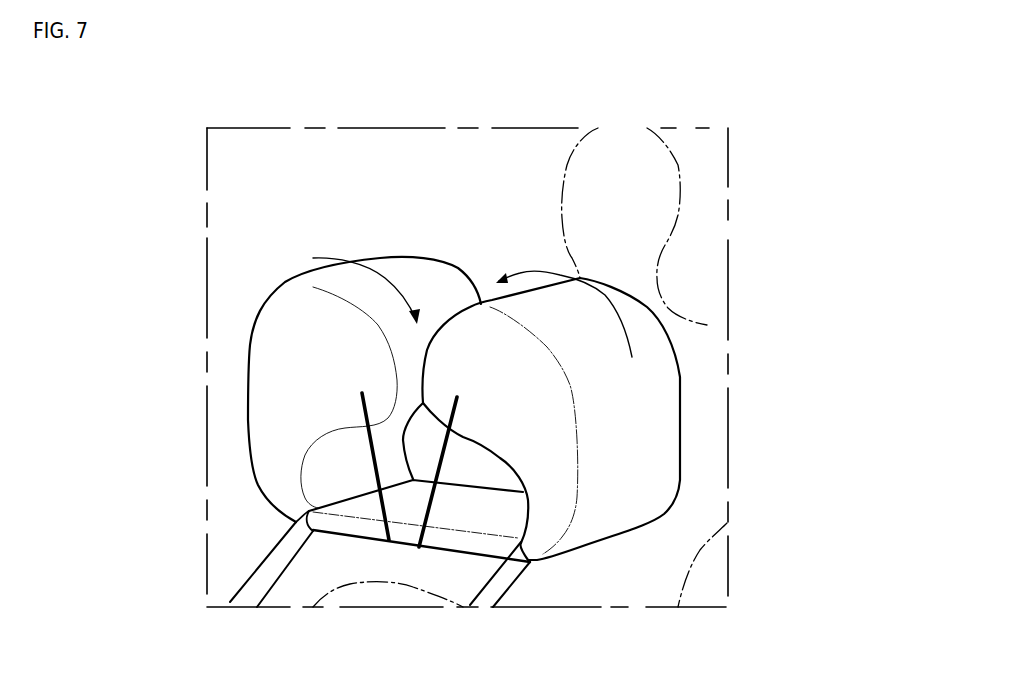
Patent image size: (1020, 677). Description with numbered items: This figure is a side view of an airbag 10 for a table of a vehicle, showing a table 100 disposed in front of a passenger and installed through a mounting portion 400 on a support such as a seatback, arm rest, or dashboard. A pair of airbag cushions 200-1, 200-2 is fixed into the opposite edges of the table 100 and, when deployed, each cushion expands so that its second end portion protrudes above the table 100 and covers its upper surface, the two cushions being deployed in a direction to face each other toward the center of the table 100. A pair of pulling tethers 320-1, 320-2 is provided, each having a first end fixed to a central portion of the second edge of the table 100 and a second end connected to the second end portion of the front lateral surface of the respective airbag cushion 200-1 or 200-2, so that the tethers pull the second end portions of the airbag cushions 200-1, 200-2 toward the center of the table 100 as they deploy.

The airbag for a table of a vehicle 10 is at (176, 108).
The table 100 is at (362, 503).
The airbag cushion 200-1 is at (287, 333).
The airbag cushion 200-2 is at (655, 462).
The pulling tether 320-1 is at (362, 410).
The pulling tether 320-2 is at (457, 408).
The mounting portion 400 is at (263, 576).